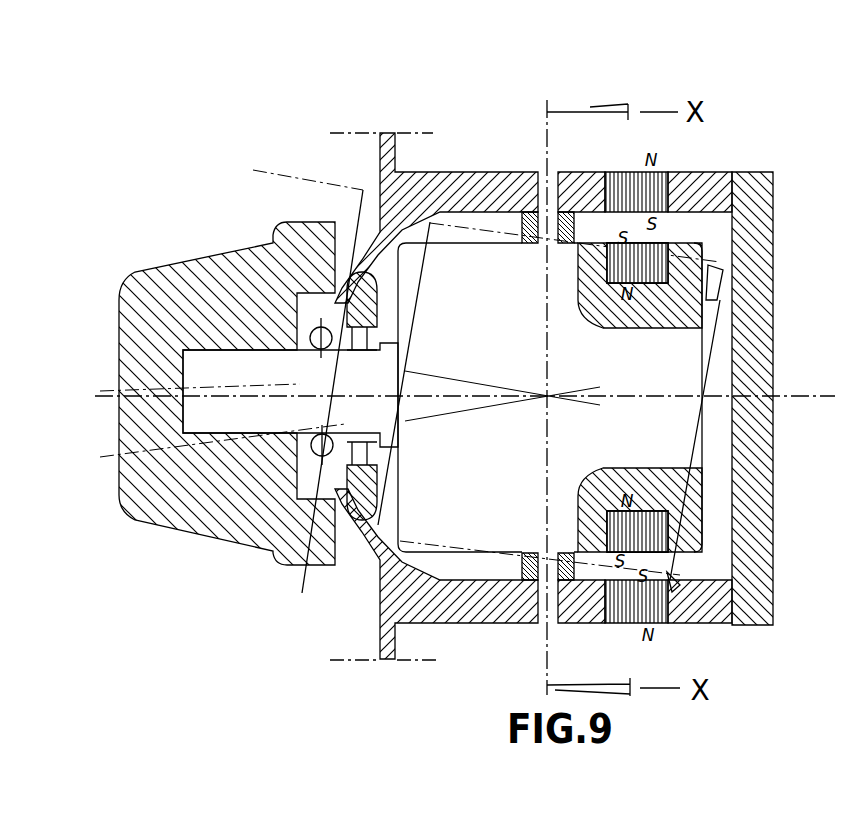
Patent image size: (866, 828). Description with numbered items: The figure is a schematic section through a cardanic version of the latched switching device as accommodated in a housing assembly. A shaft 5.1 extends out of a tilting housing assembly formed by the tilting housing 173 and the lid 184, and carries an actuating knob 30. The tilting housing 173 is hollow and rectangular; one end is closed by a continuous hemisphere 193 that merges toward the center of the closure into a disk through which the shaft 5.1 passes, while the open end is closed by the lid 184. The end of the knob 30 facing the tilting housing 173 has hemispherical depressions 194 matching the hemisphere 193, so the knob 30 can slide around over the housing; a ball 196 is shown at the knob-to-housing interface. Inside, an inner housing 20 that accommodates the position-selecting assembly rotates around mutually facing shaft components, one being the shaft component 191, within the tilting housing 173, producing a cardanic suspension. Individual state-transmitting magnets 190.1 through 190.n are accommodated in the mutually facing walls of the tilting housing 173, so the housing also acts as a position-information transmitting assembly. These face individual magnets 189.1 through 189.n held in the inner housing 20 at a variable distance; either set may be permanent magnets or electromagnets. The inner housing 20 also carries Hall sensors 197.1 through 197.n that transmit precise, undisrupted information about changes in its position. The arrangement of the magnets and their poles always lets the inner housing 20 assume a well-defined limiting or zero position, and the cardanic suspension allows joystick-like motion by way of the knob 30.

The actuating knob 30 is at (185, 495).
The shaft 5.1 is at (258, 420).
The continuous hemisphere 193 is at (302, 593).
The hemispherical depressions 194 is at (252, 248).
The ball bearing 196 is at (306, 320).
The tilting housing 173 is at (450, 185).
The shaft component 191 is at (495, 647).
The individual state-transmitting magnet 190.1 is at (688, 178).
The individual state-transmitting magnet 190.n is at (622, 625).
The individual magnet 189.1 is at (672, 237).
The individual magnet 189.n is at (670, 542).
The lid 184 is at (755, 323).
The Hall sensor 197.1 is at (715, 350).
The Hall sensor 197.n is at (672, 582).
The inner housing 20 is at (662, 450).